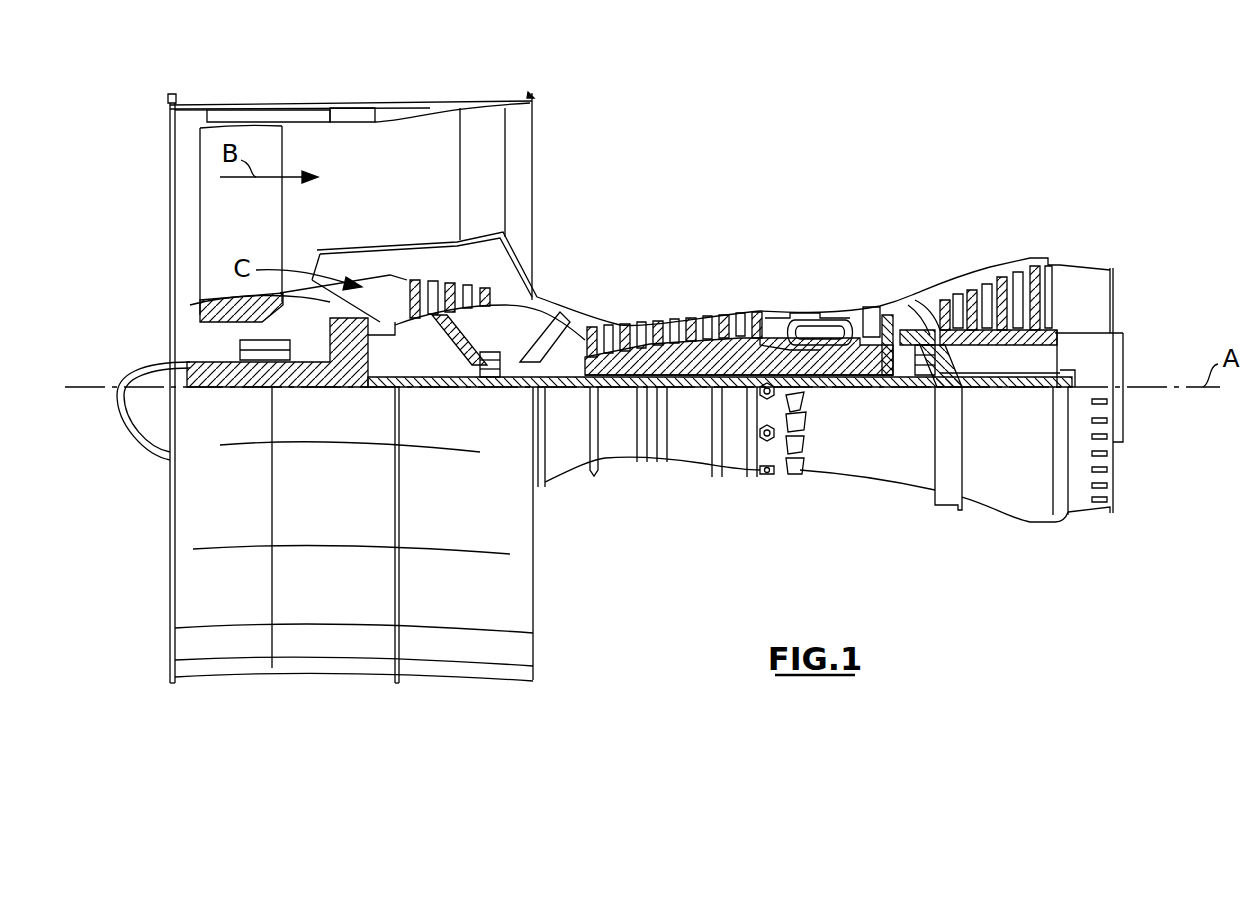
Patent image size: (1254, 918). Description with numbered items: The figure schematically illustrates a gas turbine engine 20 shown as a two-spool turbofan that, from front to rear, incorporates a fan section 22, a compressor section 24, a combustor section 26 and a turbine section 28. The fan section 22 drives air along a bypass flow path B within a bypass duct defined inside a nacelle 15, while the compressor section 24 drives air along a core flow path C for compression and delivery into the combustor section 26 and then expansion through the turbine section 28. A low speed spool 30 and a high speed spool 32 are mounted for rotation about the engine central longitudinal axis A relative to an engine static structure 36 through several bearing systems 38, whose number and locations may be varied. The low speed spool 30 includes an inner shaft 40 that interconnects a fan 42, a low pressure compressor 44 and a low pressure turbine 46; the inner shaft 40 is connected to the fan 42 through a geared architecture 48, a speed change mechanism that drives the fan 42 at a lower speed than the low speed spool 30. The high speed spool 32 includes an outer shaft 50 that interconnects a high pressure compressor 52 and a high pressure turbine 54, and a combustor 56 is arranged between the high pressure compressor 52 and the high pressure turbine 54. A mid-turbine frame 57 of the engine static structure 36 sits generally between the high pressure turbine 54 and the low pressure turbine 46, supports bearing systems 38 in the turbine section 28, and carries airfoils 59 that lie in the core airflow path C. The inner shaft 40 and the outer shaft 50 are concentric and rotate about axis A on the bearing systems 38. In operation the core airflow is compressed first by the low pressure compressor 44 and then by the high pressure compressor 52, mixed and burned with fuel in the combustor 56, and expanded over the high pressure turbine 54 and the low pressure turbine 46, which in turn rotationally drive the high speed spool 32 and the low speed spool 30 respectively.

The nacelle 15 is at (353, 108).
The gas turbine engine 20 is at (817, 150).
The fan section 22 is at (282, 94).
The compressor section 24 is at (578, 288).
The combustor section 26 is at (801, 274).
The turbine section 28 is at (950, 240).
The low speed spool 30 is at (692, 400).
The high speed spool 32 is at (733, 337).
The engine static structure 36 is at (732, 488).
The bearing systems 38 is at (490, 380).
The inner shaft 40 is at (552, 390).
The fan 42 is at (258, 233).
The low pressure compressor 44 is at (452, 300).
The low pressure turbine 46 is at (1002, 270).
The geared architecture 48 is at (357, 370).
The outer shaft 50 is at (817, 388).
The high pressure compressor 52 is at (667, 357).
The high pressure turbine 54 is at (870, 310).
The combustor 56 is at (807, 328).
The mid-turbine frame 57 is at (917, 288).
The airfoils 59 is at (930, 333).